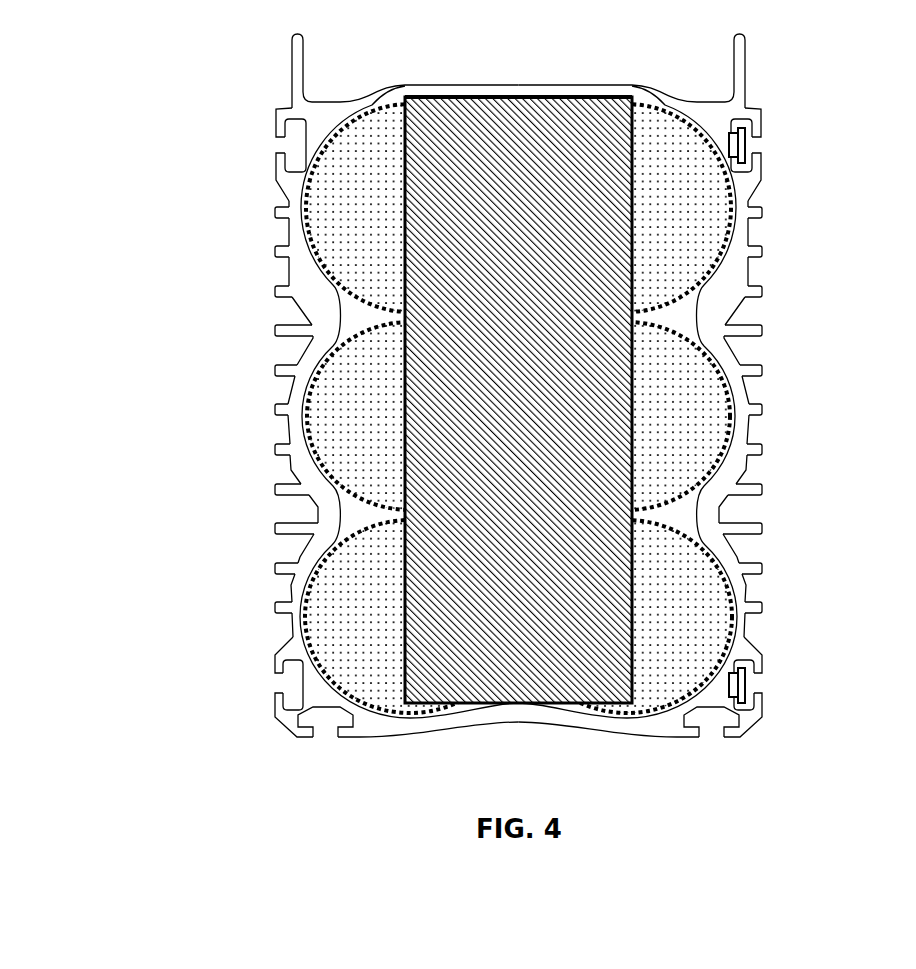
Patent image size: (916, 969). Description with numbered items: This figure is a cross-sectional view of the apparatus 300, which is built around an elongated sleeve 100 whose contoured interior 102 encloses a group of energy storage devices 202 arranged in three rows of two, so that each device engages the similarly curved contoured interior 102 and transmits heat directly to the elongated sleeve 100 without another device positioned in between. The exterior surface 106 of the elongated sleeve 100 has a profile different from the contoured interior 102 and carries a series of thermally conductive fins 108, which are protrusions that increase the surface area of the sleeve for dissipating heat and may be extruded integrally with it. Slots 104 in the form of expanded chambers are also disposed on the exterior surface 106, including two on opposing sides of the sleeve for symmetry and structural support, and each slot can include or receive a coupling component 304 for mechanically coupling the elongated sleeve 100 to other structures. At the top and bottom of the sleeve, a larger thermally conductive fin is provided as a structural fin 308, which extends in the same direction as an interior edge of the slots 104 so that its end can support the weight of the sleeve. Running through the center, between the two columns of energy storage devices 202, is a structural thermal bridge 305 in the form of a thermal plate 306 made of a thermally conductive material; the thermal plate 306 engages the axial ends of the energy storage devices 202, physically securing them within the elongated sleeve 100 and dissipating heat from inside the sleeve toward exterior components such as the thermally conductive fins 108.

The apparatus 300 is at (183, 106).
The elongated sleeve 100 is at (497, 83).
The contoured interior 102 is at (725, 566).
The slots 104 is at (290, 147).
The exterior surface 106 is at (637, 86).
The thermally conductive fins 108 is at (291, 405).
The energy storage devices 202 is at (345, 212).
The coupling component 304 is at (745, 146).
The structural thermal bridge 305 is at (396, 311).
The thermal plate 306 is at (500, 412).
The structural fin 308 is at (290, 63).